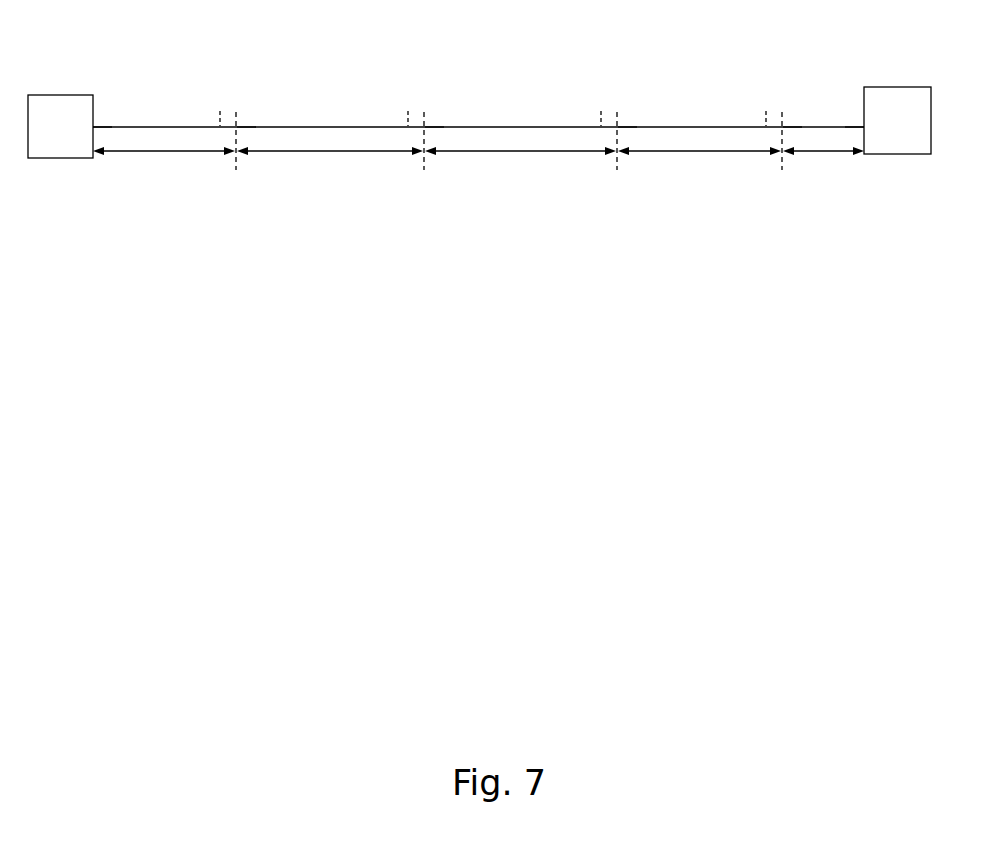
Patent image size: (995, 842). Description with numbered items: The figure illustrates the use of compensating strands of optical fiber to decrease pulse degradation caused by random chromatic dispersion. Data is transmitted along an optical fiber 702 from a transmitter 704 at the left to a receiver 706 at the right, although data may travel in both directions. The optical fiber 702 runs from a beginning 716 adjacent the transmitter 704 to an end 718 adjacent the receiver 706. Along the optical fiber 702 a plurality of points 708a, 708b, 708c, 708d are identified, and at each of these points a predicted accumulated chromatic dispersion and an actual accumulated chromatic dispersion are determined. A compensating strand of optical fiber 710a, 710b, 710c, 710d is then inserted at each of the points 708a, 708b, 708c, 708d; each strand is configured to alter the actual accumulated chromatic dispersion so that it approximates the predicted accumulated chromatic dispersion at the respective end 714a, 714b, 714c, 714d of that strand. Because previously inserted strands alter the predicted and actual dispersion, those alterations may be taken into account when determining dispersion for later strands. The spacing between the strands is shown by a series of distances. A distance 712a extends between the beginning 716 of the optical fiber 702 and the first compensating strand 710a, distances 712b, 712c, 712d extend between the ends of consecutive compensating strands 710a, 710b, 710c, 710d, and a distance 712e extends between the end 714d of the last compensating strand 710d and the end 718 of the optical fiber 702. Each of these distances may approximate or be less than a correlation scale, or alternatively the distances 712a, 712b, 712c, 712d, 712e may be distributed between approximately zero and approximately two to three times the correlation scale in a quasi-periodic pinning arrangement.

The optical fiber 702 is at (298, 127).
The transmitter 704 is at (60, 126).
The receiver 706 is at (897, 120).
The beginning of the optical fiber 716 is at (97, 127).
The end of the optical fiber 718 is at (864, 124).
The point 708a is at (220, 127).
The compensating strand of optical fiber 710a is at (236, 126).
The end of compensating strand 714a is at (238, 127).
The point 708b is at (408, 127).
The compensating strand of optical fiber 710b is at (424, 126).
The end of compensating strand 714b is at (426, 127).
The point 708c is at (601, 127).
The compensating strand of optical fiber 710c is at (617, 126).
The end of compensating strand 714c is at (619, 127).
The point 708d is at (766, 127).
The compensating strand of optical fiber 710d is at (782, 122).
The end of compensating strand 714d is at (784, 127).
The distance 712a is at (137, 152).
The distance 712b is at (302, 152).
The distance 712c is at (494, 152).
The distance 712d is at (682, 152).
The distance 712e is at (827, 152).